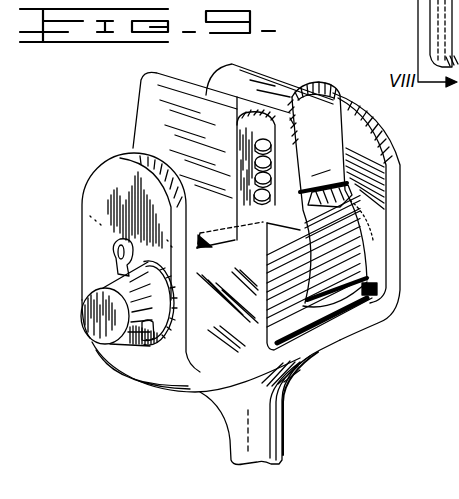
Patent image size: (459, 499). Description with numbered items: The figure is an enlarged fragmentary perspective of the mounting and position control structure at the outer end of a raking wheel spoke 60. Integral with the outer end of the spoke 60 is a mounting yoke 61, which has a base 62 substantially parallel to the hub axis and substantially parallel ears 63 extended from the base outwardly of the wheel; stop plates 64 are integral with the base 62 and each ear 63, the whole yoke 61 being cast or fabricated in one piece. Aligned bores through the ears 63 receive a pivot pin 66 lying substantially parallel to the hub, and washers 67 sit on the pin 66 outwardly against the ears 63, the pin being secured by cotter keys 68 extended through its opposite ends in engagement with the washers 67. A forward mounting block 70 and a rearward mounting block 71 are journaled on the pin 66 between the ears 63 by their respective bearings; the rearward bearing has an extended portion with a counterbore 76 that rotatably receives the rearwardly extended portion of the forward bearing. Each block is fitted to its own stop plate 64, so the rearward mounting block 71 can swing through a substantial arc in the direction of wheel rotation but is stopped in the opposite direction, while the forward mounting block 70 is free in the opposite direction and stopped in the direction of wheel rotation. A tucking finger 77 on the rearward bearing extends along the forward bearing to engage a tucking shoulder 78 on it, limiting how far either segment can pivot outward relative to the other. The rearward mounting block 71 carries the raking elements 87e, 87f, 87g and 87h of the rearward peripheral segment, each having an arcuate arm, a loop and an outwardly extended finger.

The spoke 60 is at (270, 447).
The mounting yoke 61 is at (153, 372).
The base 62 is at (345, 335).
The ear 63 is at (125, 185).
The stop plate 64 is at (250, 261).
The pivot pin 66 is at (88, 327).
The washer 67 is at (110, 268).
The cotter key 68 is at (118, 250).
The forward mounting block 70 is at (325, 142).
The rearward mounting block 71 is at (166, 119).
The counterbore 76 is at (419, 33).
The tucking finger 77 is at (380, 290).
The tucking shoulder 78 is at (350, 195).
The raking element 87e is at (313, 262).
The raking element 87f is at (270, 183).
The raking element 87g is at (292, 125).
The raking element 87h is at (256, 144).